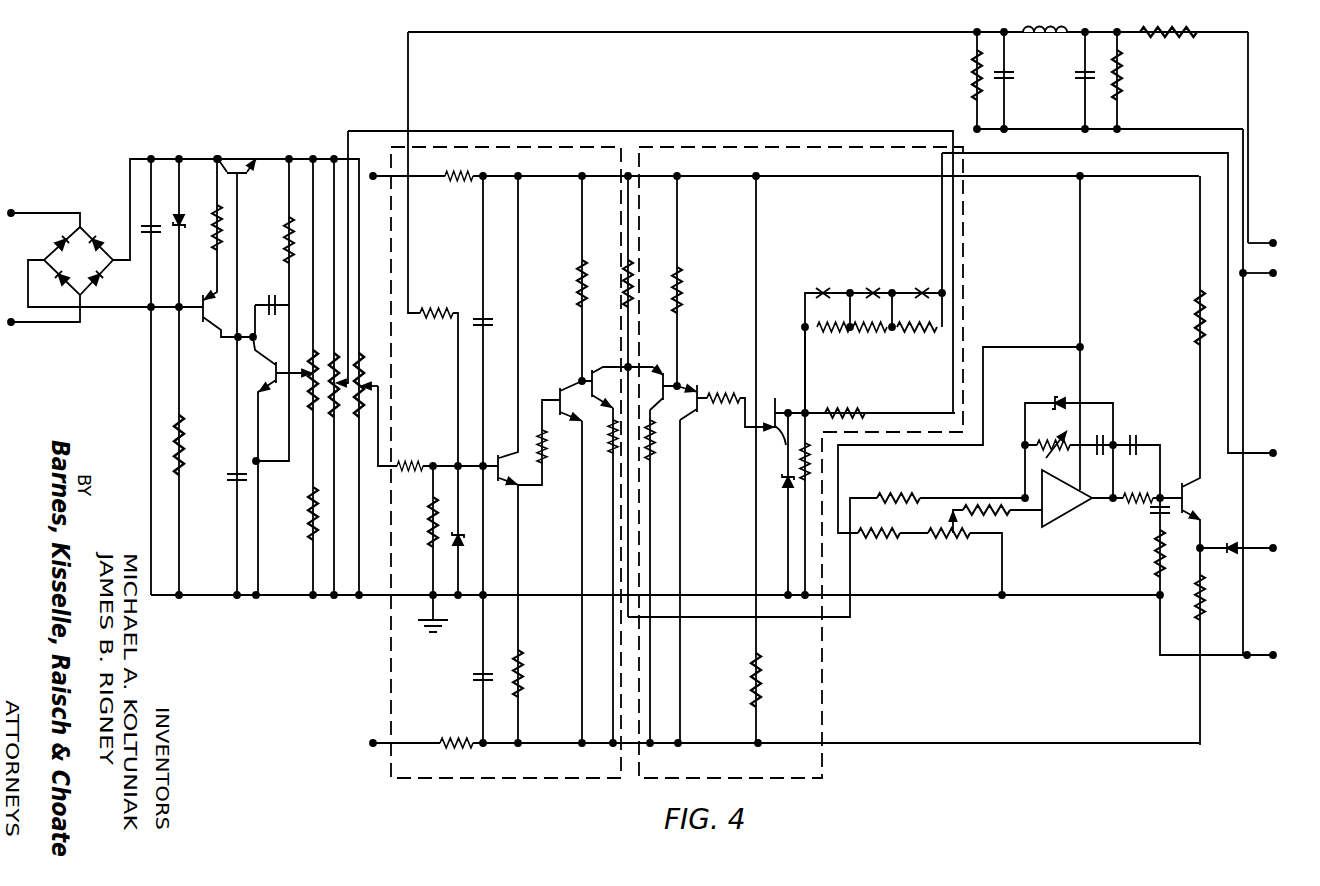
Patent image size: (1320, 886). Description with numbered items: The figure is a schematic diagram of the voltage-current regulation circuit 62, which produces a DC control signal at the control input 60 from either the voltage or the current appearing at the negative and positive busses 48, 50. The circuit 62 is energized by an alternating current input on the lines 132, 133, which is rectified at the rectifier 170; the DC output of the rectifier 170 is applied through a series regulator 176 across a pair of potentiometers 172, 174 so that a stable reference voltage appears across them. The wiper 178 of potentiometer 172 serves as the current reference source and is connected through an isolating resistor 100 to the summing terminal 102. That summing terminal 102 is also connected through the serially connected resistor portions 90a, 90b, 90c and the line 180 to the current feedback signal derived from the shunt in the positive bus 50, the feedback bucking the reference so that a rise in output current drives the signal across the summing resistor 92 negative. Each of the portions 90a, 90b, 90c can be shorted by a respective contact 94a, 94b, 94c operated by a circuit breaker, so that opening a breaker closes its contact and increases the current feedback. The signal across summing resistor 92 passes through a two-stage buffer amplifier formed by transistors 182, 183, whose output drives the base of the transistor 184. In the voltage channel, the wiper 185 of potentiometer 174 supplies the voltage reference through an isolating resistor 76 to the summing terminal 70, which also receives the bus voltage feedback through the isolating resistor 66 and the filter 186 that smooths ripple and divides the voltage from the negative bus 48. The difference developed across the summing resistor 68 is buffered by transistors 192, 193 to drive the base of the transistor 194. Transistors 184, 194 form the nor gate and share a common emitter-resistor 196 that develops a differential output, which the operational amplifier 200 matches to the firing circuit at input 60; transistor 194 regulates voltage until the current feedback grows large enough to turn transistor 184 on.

The input line 133 is at (15, 209).
The rectifier 170 is at (80, 245).
The input line 132 is at (23, 328).
The series regulator 176 is at (240, 156).
The potentiometer 172 is at (319, 356).
The potentiometer 174 is at (362, 356).
The wiper 178 is at (339, 400).
The wiper 185 is at (388, 392).
The isolating resistor 76 is at (403, 461).
The summing terminal 70 is at (430, 470).
The summing resistor 68 is at (430, 533).
The isolating resistor 66 is at (430, 311).
The voltage-current regulation circuit 62 is at (352, 650).
The summing resistor 92 is at (823, 463).
The transistor 192 is at (504, 487).
The transistor 193 is at (573, 388).
The transistor 194 is at (593, 370).
The transistor 184 is at (663, 372).
The common emitter-resistor 196 is at (632, 276).
The transistor 183 is at (700, 390).
The transistor 182 is at (781, 430).
The summing terminal 102 is at (803, 411).
The isolating resistor 100 is at (860, 403).
The contact 94a is at (835, 290).
The contact 94b is at (868, 290).
The contact 94c is at (932, 290).
The resistor portion 90a is at (822, 335).
The resistor portion 90b is at (866, 335).
The resistor portion 90c is at (906, 335).
The line 180 is at (1061, 153).
The filter 186 is at (1050, 87).
The negative bus 48 is at (1273, 240).
The positive bus 50 is at (1273, 276).
The control input 60 is at (1273, 551).
The operational amplifier 200 is at (1077, 560).